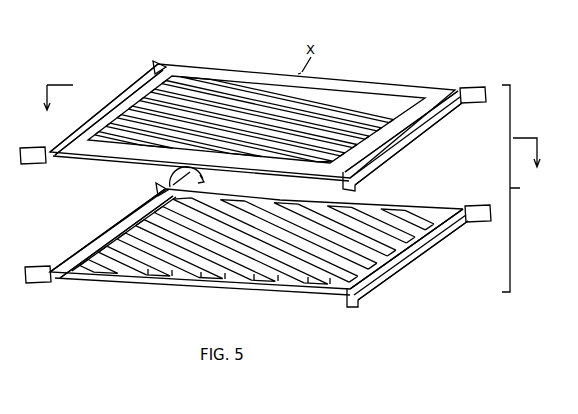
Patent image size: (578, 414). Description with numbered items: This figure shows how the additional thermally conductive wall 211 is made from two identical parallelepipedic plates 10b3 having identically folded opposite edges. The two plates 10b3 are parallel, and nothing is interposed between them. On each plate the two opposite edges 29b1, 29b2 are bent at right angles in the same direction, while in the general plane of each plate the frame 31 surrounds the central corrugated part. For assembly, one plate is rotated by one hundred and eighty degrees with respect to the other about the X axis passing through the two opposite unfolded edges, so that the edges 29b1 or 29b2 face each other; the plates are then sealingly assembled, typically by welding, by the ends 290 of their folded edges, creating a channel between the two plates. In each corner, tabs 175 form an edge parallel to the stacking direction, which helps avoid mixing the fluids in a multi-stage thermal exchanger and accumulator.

The parallelepipedic plate 10b3 is at (443, 77).
The tab 175 is at (478, 103).
The end of folded edge 290 is at (435, 121).
The first bent edge 29b1 is at (51, 154).
The second bent edge 29b2 is at (383, 152).
The frame 31 is at (290, 163).
The additional thermally conductive wall 211 is at (525, 188).